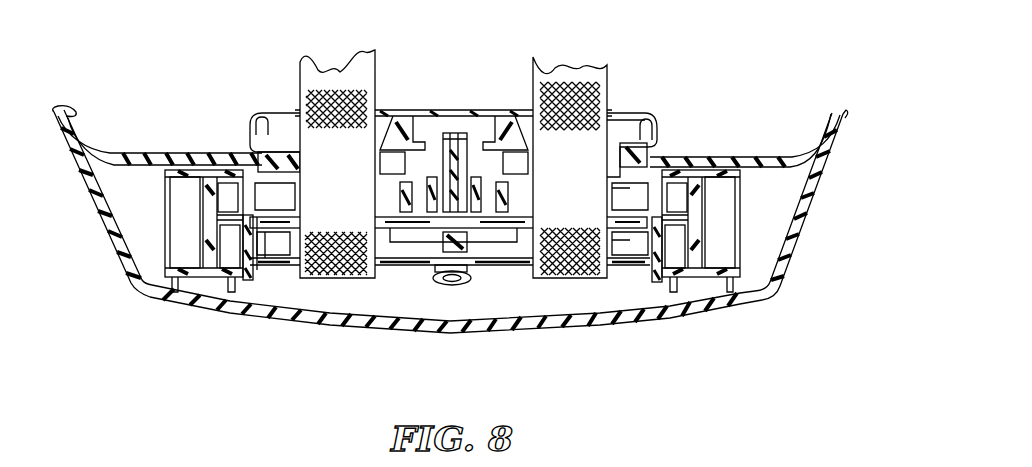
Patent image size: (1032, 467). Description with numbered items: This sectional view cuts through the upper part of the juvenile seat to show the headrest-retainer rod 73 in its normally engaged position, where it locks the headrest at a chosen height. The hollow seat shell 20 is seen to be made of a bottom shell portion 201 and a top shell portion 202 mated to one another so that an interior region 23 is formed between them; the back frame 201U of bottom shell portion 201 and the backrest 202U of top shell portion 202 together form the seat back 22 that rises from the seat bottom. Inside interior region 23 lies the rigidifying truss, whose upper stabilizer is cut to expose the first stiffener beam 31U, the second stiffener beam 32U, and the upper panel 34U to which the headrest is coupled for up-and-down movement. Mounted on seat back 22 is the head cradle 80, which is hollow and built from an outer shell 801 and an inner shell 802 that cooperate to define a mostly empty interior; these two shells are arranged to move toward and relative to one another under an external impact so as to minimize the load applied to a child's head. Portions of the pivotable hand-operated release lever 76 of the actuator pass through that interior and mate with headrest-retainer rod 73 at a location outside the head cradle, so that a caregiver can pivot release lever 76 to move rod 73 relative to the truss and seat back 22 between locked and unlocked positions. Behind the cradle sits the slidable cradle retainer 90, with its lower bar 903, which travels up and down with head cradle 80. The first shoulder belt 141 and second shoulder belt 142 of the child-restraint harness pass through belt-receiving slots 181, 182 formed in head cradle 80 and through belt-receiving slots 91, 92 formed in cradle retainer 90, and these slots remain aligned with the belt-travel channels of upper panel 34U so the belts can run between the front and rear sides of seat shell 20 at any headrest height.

The hollow seat shell 20 is at (472, 195).
The bottom shell portion 201 is at (840, 178).
The top shell portion 202 is at (792, 143).
The back frame 201U is at (107, 265).
The backrest 202U is at (113, 143).
The seat back 22 is at (167, 316).
The interior region 23 is at (763, 210).
The first stiffener beam 31U is at (155, 203).
The second stiffener beam 32U is at (750, 238).
The upper panel 34U is at (256, 290).
The headrest-retainer rod 73 is at (514, 232).
The release lever 76 is at (465, 126).
The head cradle 80 is at (690, 85).
The outer shell 801 is at (638, 103).
The inner shell 802 is at (665, 148).
The cradle retainer 90 is at (508, 252).
The belt-receiving slot 91 is at (380, 180).
The belt-receiving slot 92 is at (612, 182).
The lower bar 903 is at (633, 272).
The first shoulder belt 141 is at (337, 88).
The second shoulder belt 142 is at (563, 82).
The belt-receiving slot 181 is at (288, 125).
The belt-receiving slot 182 is at (616, 125).